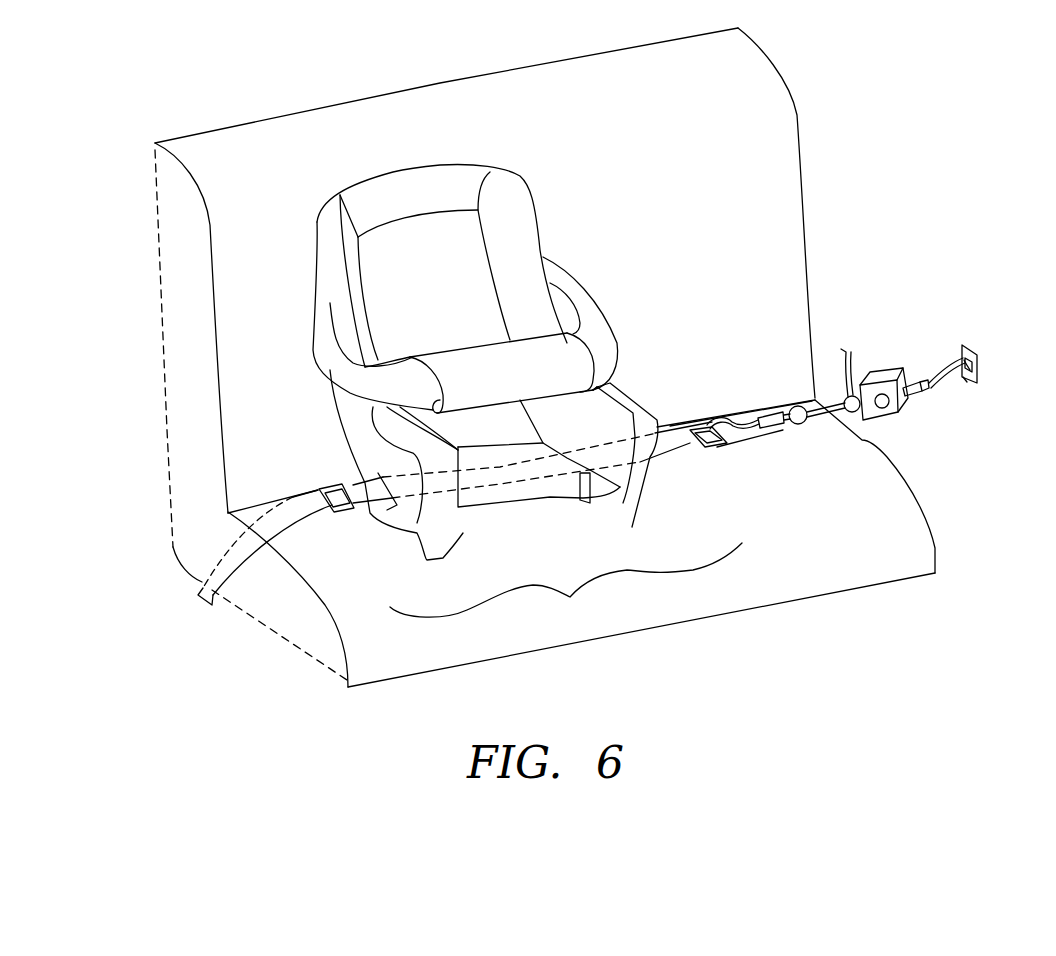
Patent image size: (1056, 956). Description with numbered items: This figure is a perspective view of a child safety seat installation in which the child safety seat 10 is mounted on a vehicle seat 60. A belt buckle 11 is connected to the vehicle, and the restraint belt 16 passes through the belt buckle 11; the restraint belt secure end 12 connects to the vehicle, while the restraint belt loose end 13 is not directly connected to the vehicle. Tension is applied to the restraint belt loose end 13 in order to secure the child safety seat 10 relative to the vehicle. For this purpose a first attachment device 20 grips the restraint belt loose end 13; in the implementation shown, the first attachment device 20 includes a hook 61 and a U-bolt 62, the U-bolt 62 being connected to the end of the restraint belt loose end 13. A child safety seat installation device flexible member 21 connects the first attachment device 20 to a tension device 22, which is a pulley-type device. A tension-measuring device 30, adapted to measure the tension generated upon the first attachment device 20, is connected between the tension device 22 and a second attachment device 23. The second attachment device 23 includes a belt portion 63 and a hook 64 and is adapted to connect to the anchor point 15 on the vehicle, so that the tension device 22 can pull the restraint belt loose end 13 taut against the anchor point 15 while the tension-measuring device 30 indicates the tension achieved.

The vehicle seat 60 is at (755, 72).
The child safety seat 10 is at (408, 185).
The belt buckle 11 is at (347, 520).
The restraint belt loose end 13 is at (667, 450).
The restraint belt secure end 12 is at (620, 490).
The restraint belt 16 is at (566, 586).
The first attachment device 20 is at (757, 397).
The U-bolt 62 is at (720, 447).
The hook 61 is at (737, 423).
The child safety seat installation device flexible member 21 is at (770, 430).
The tension device 22 is at (778, 432).
The tension-measuring device 30 is at (878, 372).
The hook 64 is at (907, 380).
The belt portion 63 is at (938, 370).
The anchor point 15 is at (972, 343).
The second attachment device 23 is at (993, 390).